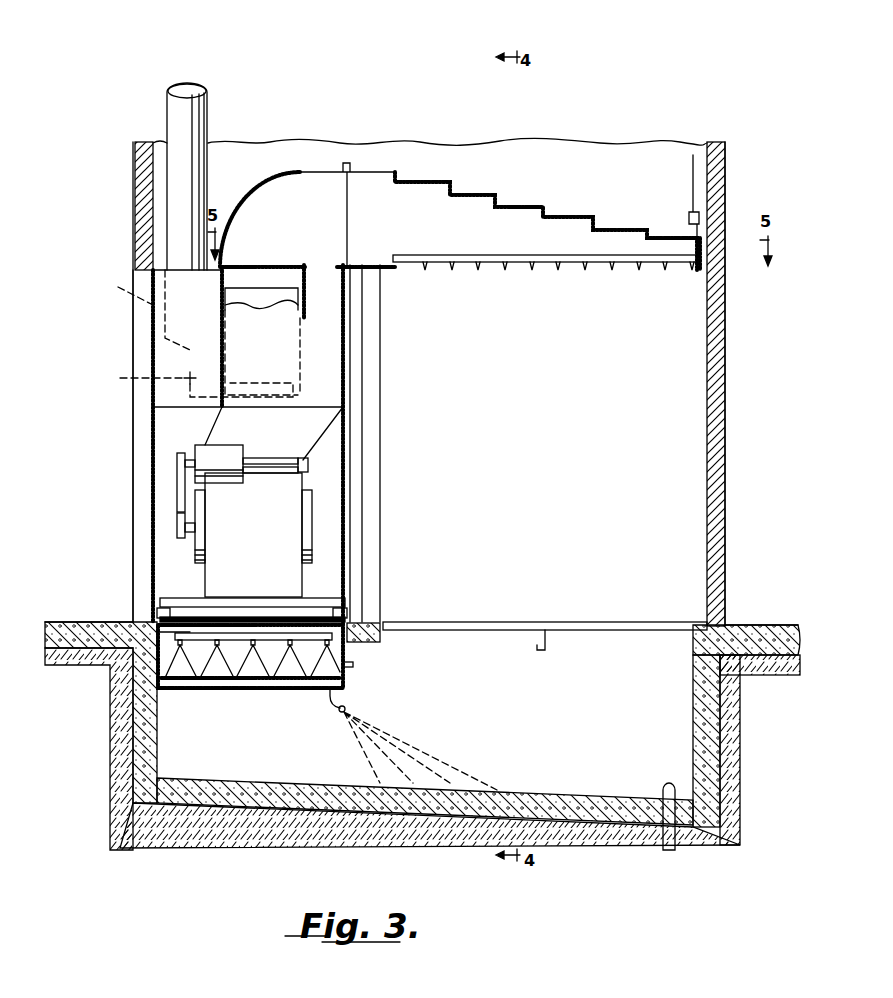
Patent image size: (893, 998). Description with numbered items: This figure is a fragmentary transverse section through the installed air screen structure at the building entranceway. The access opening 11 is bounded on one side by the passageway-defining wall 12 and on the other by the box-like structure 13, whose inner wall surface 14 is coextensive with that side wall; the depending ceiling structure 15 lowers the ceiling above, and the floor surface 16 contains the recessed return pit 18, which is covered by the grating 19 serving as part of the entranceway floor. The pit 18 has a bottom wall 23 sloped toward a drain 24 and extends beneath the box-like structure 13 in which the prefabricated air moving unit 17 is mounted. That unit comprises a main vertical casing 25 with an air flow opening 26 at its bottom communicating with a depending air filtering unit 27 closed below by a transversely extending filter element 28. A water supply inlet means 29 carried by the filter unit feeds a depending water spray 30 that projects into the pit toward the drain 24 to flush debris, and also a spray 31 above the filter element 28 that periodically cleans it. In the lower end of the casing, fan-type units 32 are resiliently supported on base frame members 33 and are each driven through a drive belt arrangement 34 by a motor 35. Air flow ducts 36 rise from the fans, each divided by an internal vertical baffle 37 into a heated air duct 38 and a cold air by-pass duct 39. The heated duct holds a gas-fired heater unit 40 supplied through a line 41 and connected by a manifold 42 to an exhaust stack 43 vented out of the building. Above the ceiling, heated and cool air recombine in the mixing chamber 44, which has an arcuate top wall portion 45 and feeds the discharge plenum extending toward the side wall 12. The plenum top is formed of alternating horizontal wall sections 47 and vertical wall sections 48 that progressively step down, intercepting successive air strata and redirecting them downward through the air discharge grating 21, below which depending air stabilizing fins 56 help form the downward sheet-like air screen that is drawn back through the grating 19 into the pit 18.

The access opening 11 is at (708, 384).
The passageway-defining wall 12 is at (726, 455).
The box-like structure 13 is at (138, 432).
The inner wall surface 14 is at (382, 445).
The depending ceiling structure 15 is at (135, 182).
The floor surface 16 is at (760, 625).
The air moving unit 17 is at (146, 344).
The pit 18 is at (683, 707).
The grating 19 is at (475, 622).
The air discharge grating 21 is at (553, 243).
The bottom wall 23 is at (533, 790).
The drain 24 is at (657, 790).
The main vertical casing 25 is at (352, 505).
The air flow opening 26 is at (313, 617).
The air filtering unit 27 is at (158, 658).
The filter element 28 is at (230, 692).
The water supply inlet means 29 is at (347, 655).
The water spray 30 is at (340, 700).
The spray 31 is at (166, 631).
The fan-type unit 32 is at (292, 553).
The base frame member 33 is at (190, 585).
The drive belt arrangement 34 is at (178, 495).
The motor 35 is at (232, 452).
The air flow duct 36 is at (313, 440).
The internal vertical baffle 37 is at (307, 280).
The heated air duct 38 is at (222, 287).
The cold air by-pass duct 39 is at (337, 305).
The heater unit 40 is at (252, 297).
The gas line 41 is at (190, 381).
The manifold 42 is at (135, 310).
The exhaust stack 43 is at (208, 110).
The mixing chamber 44 is at (293, 182).
The arcuate top wall portion 45 is at (255, 195).
The horizontal wall section 47 is at (417, 180).
The vertical wall section 48 is at (490, 200).
The air stabilizing fin 56 is at (505, 263).